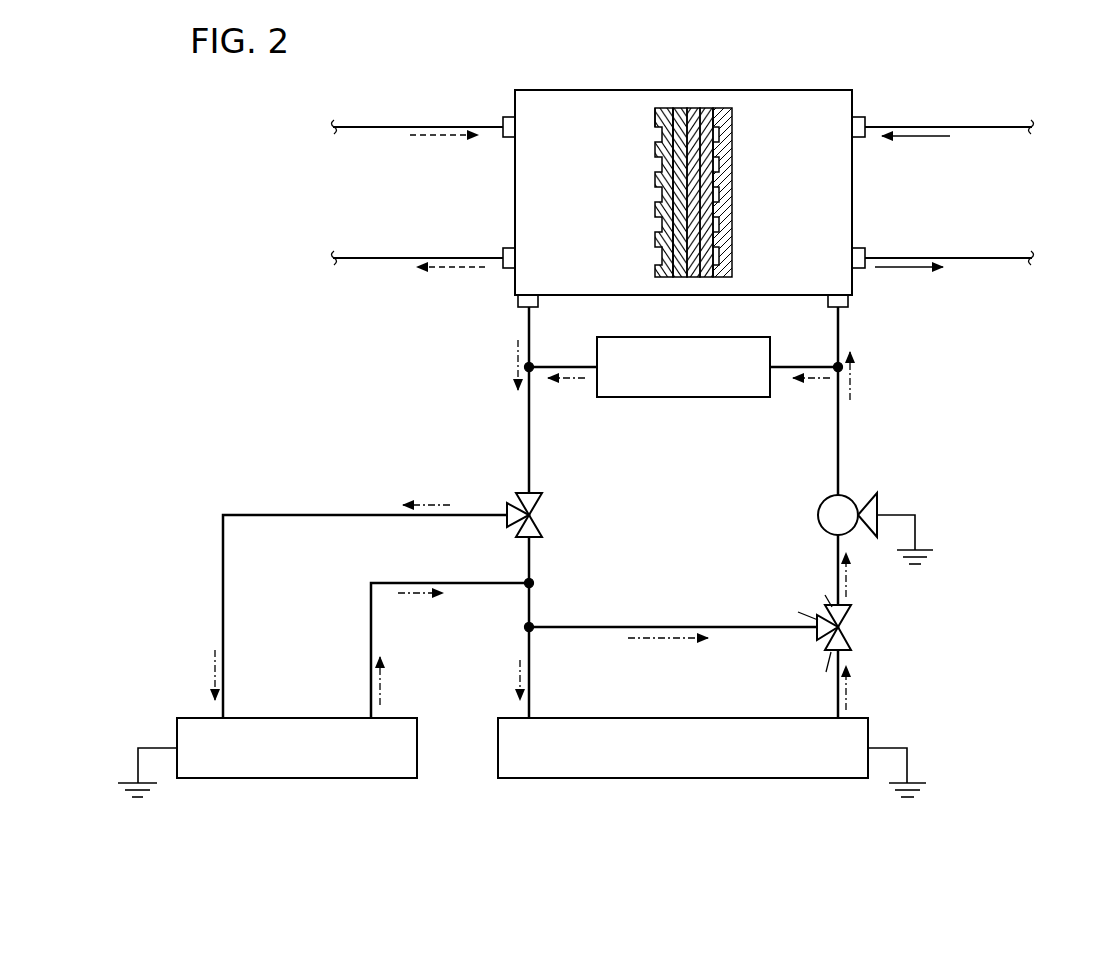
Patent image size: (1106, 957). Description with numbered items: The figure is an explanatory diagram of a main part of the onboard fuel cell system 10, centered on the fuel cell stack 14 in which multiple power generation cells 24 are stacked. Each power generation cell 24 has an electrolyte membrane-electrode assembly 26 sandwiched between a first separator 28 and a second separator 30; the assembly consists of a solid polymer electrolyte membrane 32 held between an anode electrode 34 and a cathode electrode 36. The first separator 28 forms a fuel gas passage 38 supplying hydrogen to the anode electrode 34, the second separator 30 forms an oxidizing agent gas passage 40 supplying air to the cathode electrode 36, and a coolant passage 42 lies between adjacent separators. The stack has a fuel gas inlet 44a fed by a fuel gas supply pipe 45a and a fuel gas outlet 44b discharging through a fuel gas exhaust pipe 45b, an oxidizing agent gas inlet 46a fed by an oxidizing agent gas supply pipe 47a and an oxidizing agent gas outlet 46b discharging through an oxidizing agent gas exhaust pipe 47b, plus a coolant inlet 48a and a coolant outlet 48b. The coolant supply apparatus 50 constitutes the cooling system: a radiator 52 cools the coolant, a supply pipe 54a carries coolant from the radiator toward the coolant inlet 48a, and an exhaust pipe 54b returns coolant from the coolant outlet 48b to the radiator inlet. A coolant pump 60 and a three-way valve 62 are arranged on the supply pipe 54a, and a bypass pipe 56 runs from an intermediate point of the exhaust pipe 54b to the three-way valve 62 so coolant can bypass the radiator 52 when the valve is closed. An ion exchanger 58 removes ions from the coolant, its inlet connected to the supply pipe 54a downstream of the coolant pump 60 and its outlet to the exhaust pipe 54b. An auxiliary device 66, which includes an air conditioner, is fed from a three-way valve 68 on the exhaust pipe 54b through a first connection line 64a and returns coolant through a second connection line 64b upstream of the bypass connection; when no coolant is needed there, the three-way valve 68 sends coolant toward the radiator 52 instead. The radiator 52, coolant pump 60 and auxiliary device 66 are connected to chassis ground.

The fuel cell system 10 is at (268, 99).
The fuel cell stack 14 is at (510, 76).
The power generation cell 24 is at (762, 96).
The electrolyte membrane-electrode assembly 26 is at (753, 50).
The first separator 28 is at (660, 121).
The second separator 30 is at (728, 120).
The solid polymer electrolyte membrane 32 is at (693, 107).
The anode electrode 34 is at (680, 107).
The cathode electrode 36 is at (706, 107).
The fuel gas passage 38 is at (672, 164).
The oxidizing agent gas passage 40 is at (716, 164).
The coolant passage 42 is at (660, 222).
The fuel gas inlet 44a is at (866, 120).
The fuel gas outlet 44b is at (866, 251).
The fuel gas supply pipe 45a is at (997, 126).
The fuel gas exhaust pipe 45b is at (997, 257).
The oxidizing agent gas inlet 46a is at (503, 120).
The oxidizing agent gas outlet 46b is at (503, 251).
The oxidizing agent gas supply pipe 47a is at (368, 126).
The oxidizing agent gas exhaust pipe 47b is at (368, 257).
The coolant inlet 48a is at (848, 303).
The coolant outlet 48b is at (518, 303).
The coolant supply apparatus 50 is at (937, 498).
The radiator 52 is at (667, 717).
The supply pipe 54a is at (840, 473).
The exhaust pipe 54b is at (527, 406).
The bypass pipe 56 is at (597, 626).
The ion exchanger 58 is at (670, 398).
The coolant pump 60 is at (820, 518).
The three-way valve 62 is at (846, 615).
The first connection line 64a is at (355, 513).
The second connection line 64b is at (467, 586).
The auxiliary device 66 is at (318, 717).
The three-way valve 68 is at (506, 521).